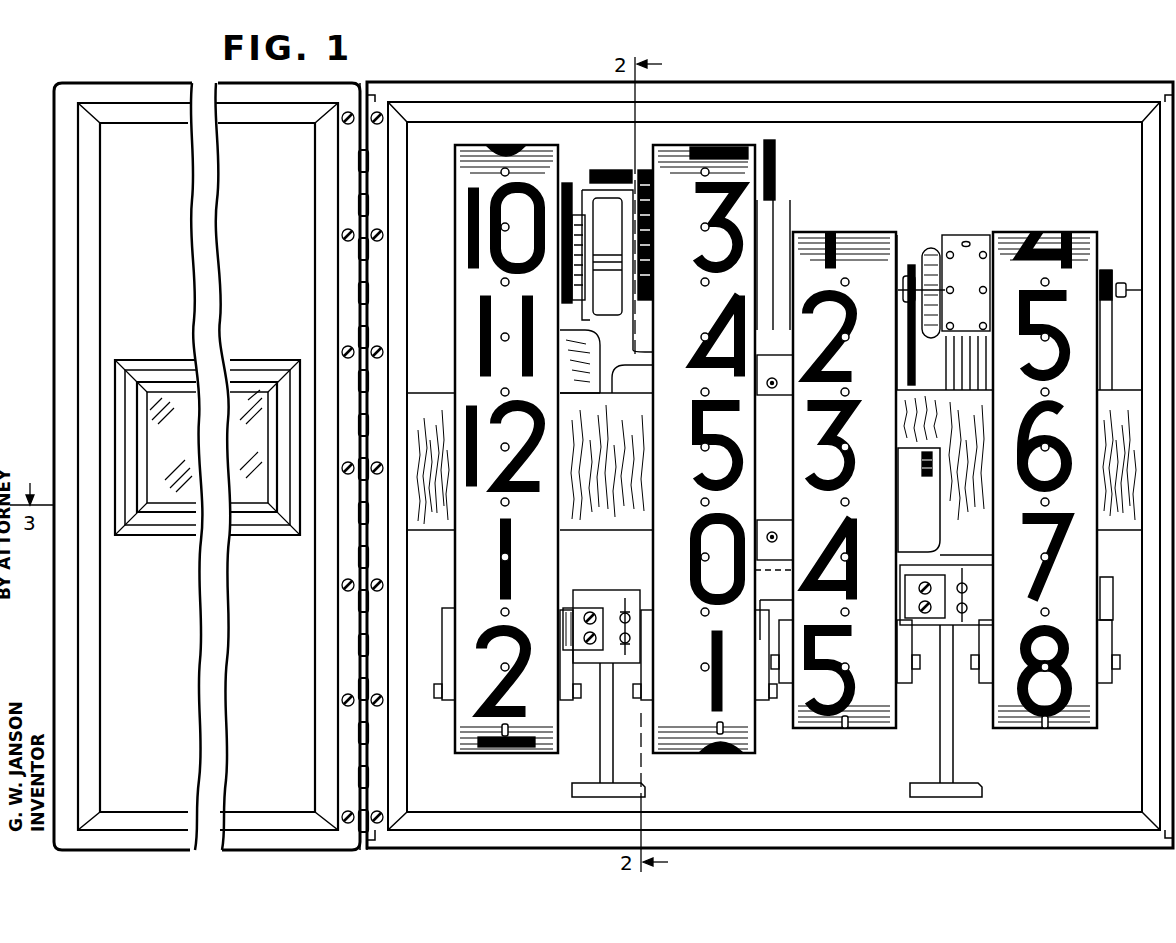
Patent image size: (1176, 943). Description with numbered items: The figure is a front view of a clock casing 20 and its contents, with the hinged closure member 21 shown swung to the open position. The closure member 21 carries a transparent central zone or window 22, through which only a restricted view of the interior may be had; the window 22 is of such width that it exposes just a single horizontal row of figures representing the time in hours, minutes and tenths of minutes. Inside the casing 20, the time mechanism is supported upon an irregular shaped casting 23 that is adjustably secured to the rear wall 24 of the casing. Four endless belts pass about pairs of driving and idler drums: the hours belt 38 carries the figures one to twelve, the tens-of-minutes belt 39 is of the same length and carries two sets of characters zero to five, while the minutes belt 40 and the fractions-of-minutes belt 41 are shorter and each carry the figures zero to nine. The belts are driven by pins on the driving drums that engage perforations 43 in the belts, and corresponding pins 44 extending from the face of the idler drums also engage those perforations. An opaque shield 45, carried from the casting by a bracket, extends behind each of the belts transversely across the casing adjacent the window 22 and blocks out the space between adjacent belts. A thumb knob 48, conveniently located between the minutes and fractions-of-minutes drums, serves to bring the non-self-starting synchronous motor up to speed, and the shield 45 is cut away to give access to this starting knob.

The casing 20 is at (960, 92).
The hinged closure member 21 is at (60, 264).
The window 22 is at (171, 500).
The casting 23 is at (603, 736).
The rear wall 24 is at (774, 467).
The hours belt 38 is at (462, 560).
The tens-of-minutes belt 39 is at (668, 486).
The minutes belt 40 is at (890, 516).
The fractions-of-minutes belt 41 is at (1086, 510).
The perforations 43 is at (504, 558).
The pins 44 is at (503, 738).
The opaque shield 45 is at (431, 408).
The thumb knob 48 is at (922, 468).